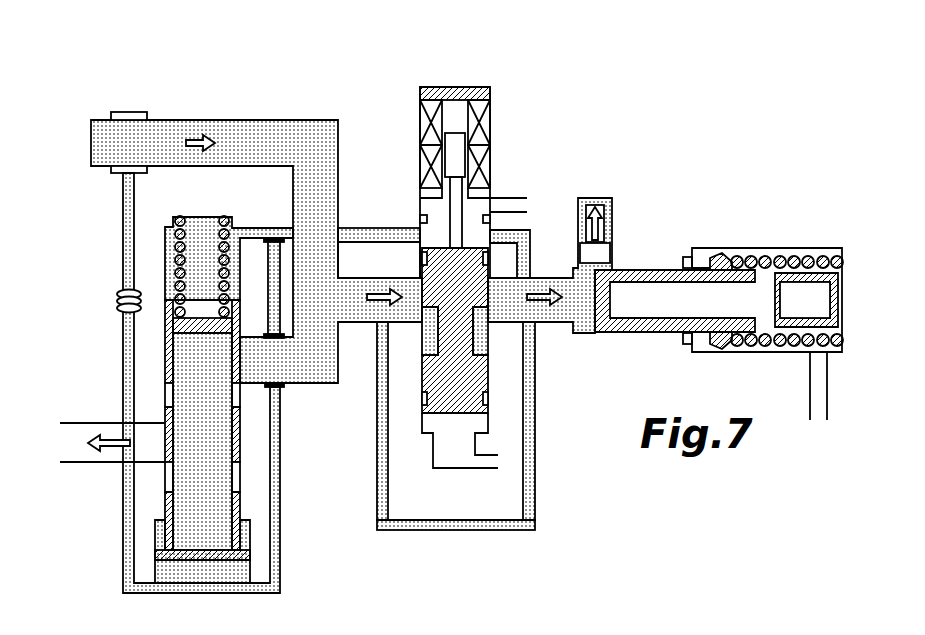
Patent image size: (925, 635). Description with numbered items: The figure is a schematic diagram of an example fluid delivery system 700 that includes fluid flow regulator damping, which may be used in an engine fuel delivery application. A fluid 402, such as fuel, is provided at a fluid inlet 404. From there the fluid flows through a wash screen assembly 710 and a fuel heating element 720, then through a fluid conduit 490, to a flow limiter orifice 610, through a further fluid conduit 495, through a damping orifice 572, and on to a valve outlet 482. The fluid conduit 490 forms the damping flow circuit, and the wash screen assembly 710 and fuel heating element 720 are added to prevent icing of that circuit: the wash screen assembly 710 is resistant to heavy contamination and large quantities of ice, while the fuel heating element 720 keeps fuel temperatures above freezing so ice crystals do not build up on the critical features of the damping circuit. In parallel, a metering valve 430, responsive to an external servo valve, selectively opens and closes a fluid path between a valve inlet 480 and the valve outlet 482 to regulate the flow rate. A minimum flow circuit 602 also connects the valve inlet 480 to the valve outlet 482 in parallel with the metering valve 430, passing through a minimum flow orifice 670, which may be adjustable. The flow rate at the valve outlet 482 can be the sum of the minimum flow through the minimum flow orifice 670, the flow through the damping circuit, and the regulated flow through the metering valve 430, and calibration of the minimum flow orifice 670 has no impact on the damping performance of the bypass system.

The fluid delivery system 700 is at (318, 72).
The fluid 402 is at (105, 135).
The fluid inlet 404 is at (160, 120).
The wash screen assembly 710 is at (126, 112).
The fluid conduit 490 is at (123, 373).
The fuel heating element 720 is at (117, 300).
The fluid conduit 495 is at (242, 227).
The flow limiter orifice 610 is at (266, 290).
The damping orifice 572 is at (373, 232).
The valve inlet 480 is at (377, 278).
The metering valve 430 is at (510, 120).
The valve outlet 482 is at (549, 278).
The minimum flow circuit 602 is at (535, 430).
The minimum flow orifice 670 is at (466, 503).